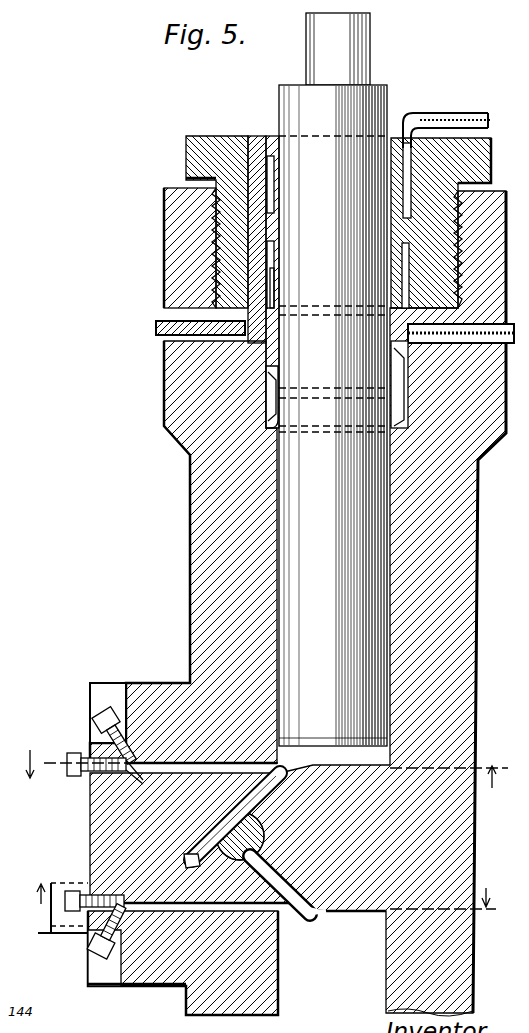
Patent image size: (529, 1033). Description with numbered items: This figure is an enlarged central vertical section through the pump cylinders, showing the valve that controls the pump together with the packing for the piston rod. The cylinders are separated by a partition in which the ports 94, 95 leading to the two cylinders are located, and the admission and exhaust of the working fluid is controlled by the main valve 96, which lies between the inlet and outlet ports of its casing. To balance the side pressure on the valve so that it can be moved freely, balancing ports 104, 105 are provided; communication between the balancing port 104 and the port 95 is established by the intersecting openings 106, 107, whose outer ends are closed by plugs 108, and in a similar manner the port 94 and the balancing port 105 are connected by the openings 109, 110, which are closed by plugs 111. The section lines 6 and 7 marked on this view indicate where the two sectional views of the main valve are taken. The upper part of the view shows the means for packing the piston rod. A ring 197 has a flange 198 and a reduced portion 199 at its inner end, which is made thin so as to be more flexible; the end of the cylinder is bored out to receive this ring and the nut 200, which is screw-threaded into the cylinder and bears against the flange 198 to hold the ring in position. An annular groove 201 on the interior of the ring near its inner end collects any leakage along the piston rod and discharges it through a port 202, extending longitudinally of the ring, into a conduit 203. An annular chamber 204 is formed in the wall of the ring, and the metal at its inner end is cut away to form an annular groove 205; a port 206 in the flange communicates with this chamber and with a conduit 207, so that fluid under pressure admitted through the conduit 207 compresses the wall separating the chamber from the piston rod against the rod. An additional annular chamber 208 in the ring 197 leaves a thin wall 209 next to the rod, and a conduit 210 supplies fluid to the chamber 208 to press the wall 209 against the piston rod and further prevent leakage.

The port 94 is at (243, 748).
The port 95 is at (285, 888).
The main valve 96 is at (175, 975).
The balancing port 104 is at (200, 800).
The balancing port 105 is at (178, 853).
The opening 106 is at (256, 905).
The opening 107 is at (160, 846).
The plug 108 is at (66, 884).
The opening 109 is at (150, 696).
The opening 110 is at (118, 782).
The plug 111 is at (94, 708).
The ring 197 is at (250, 135).
The flange 198 is at (258, 300).
The reduced portion 199 is at (262, 375).
The nut 200 is at (190, 142).
The annular groove 201 is at (262, 388).
The port 202 is at (396, 400).
The conduit 203 is at (461, 352).
The annular chamber 204 is at (262, 248).
The annular groove 205 is at (262, 268).
The port 206 is at (156, 340).
The conduit 207 is at (148, 316).
The annular chamber 208 is at (156, 192).
The thin wall 209 is at (262, 165).
The conduit 210 is at (420, 119).
The section line 6- 6 is at (265, 833).
The section line 7- 7 is at (260, 835).